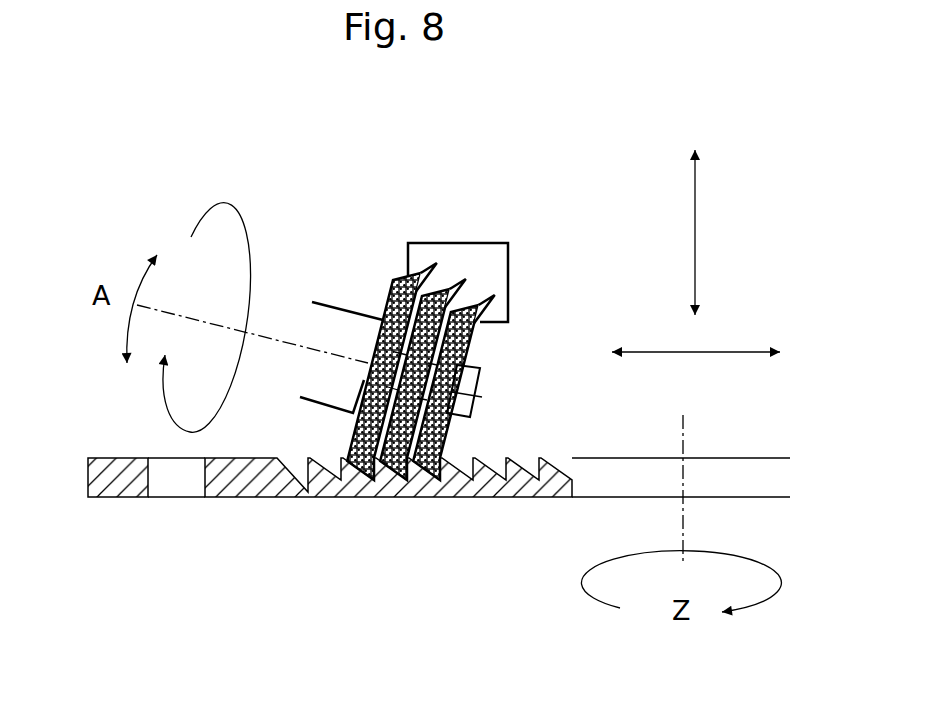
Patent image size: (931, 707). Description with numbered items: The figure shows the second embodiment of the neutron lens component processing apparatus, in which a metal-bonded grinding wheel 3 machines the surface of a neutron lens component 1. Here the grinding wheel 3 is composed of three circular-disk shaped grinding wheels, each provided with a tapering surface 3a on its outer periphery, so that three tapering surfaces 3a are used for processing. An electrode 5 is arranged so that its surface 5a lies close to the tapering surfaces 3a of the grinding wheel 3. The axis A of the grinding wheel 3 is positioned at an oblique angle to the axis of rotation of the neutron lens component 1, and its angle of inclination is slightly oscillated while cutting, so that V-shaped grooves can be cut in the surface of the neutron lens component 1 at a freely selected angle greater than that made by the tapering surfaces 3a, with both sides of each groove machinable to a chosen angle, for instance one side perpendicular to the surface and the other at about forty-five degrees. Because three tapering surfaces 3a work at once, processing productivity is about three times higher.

The neutron lens component 1 is at (239, 490).
The metal-bonded grinding wheel 3 is at (465, 347).
The tapering surfaces 3a is at (483, 313).
The electrode 5 is at (463, 253).
The electrode surface 5a is at (392, 284).